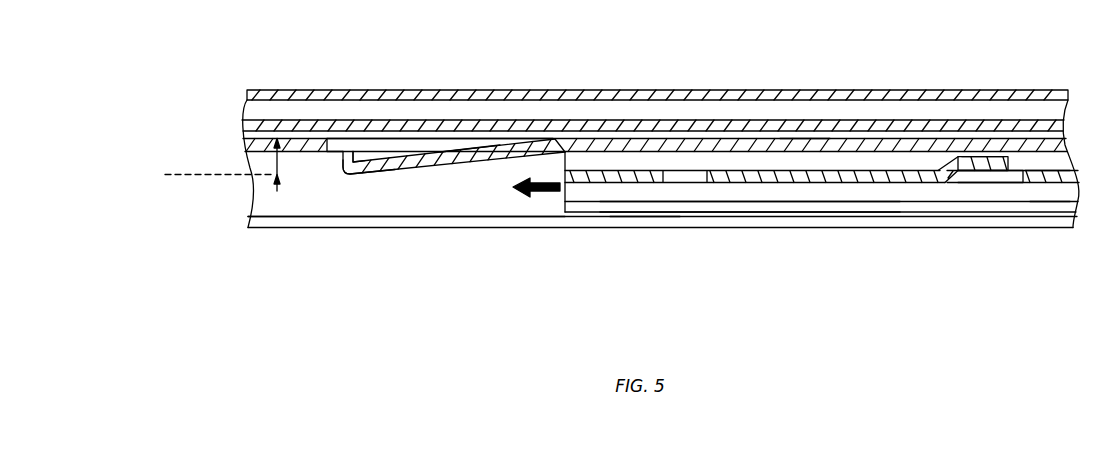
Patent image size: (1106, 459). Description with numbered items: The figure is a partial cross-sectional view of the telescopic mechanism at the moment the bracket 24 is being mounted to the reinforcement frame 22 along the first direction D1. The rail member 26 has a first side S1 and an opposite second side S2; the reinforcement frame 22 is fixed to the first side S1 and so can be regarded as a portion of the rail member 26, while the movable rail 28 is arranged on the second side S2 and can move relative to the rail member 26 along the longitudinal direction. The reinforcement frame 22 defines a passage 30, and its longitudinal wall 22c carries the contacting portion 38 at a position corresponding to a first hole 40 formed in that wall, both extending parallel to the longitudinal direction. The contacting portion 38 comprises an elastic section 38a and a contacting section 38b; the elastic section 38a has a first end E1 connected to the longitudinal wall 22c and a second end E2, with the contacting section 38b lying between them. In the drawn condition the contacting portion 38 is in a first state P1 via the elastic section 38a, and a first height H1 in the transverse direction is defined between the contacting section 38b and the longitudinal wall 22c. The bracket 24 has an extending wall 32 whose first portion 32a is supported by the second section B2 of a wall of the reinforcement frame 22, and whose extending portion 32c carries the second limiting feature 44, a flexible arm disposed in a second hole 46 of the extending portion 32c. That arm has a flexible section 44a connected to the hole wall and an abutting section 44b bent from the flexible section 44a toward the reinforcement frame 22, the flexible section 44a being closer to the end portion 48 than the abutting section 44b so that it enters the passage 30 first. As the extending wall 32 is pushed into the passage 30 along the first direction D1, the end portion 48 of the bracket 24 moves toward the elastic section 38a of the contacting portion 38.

The reinforcement frame 22 is at (693, 136).
The longitudinal wall 22c is at (804, 142).
The bracket 24 is at (983, 228).
The rail member 26 is at (256, 119).
The movable rail 28 is at (288, 90).
The passage 30 is at (333, 200).
The extending wall 32 is at (920, 192).
The first portion 32a is at (727, 206).
The extending portion 32c is at (845, 178).
The contacting portion 38 is at (434, 182).
The elastic section 38a is at (478, 155).
The contacting section 38b is at (382, 170).
The first hole 40 is at (430, 147).
The second limiting feature 44 is at (954, 144).
The flexible section 44a is at (947, 181).
The abutting section 44b is at (985, 163).
The second hole 46 is at (1010, 180).
The end portion 48 is at (570, 205).
The second section B2 is at (640, 222).
The first direction D1 is at (524, 186).
The first end E1 is at (563, 150).
The second end E2 is at (352, 162).
The first height H1 is at (290, 165).
The first state P1 is at (205, 174).
The first side S1 is at (1042, 192).
The second side S2 is at (1038, 172).